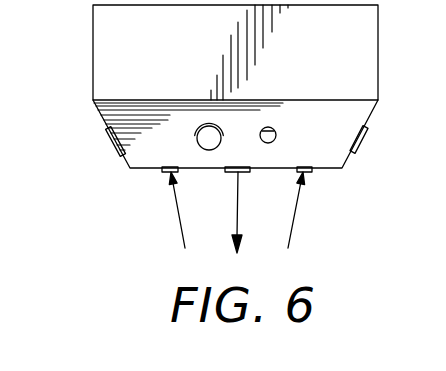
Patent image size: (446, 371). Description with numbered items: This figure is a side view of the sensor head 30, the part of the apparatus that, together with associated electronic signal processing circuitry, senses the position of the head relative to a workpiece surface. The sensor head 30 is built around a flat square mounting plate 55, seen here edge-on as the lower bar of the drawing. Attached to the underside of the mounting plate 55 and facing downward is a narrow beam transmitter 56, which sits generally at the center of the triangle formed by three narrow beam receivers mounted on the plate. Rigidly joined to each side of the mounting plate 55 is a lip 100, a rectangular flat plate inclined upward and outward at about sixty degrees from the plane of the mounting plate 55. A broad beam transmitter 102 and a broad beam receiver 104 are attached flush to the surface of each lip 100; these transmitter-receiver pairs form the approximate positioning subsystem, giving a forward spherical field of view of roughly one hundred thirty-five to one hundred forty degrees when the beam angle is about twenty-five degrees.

The sensor head 30 is at (93, 11).
The lip 100 is at (95, 108).
The broad beam transmitter 102 is at (197, 141).
The broad beam receiver 104 is at (278, 135).
The mounting plate 55 is at (147, 168).
The narrow beam transmitter 56 is at (228, 171).